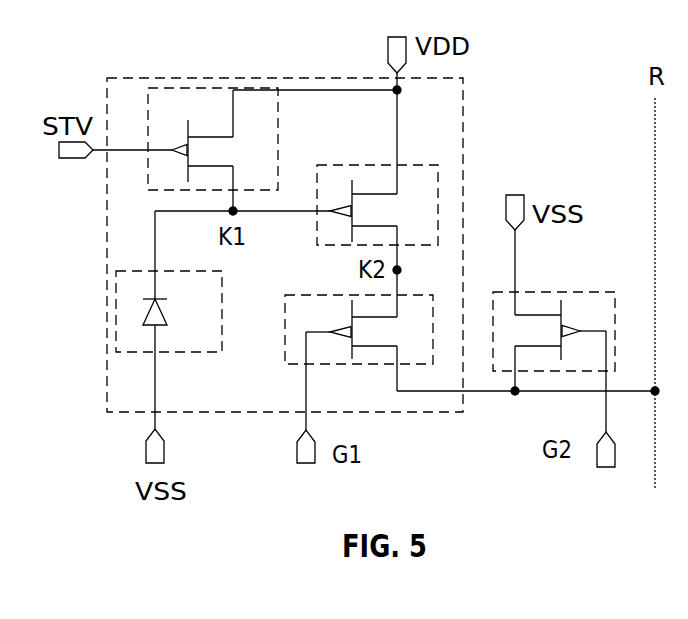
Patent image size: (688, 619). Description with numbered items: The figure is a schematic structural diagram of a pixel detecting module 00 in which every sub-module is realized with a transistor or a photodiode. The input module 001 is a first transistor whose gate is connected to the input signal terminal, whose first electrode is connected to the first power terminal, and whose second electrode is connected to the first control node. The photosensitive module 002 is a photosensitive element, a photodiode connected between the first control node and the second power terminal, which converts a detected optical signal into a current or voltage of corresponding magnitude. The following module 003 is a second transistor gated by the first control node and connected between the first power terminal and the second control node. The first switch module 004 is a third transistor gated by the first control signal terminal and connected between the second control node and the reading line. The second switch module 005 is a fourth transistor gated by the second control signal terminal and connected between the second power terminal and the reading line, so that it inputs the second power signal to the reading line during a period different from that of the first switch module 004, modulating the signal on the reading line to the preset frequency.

The pixel detecting module 00 is at (463, 165).
The input module 001 is at (278, 147).
The photosensitive module 002 is at (170, 353).
The following module 003 is at (400, 165).
The first switch module 004 is at (323, 365).
The second switch module 005 is at (585, 293).